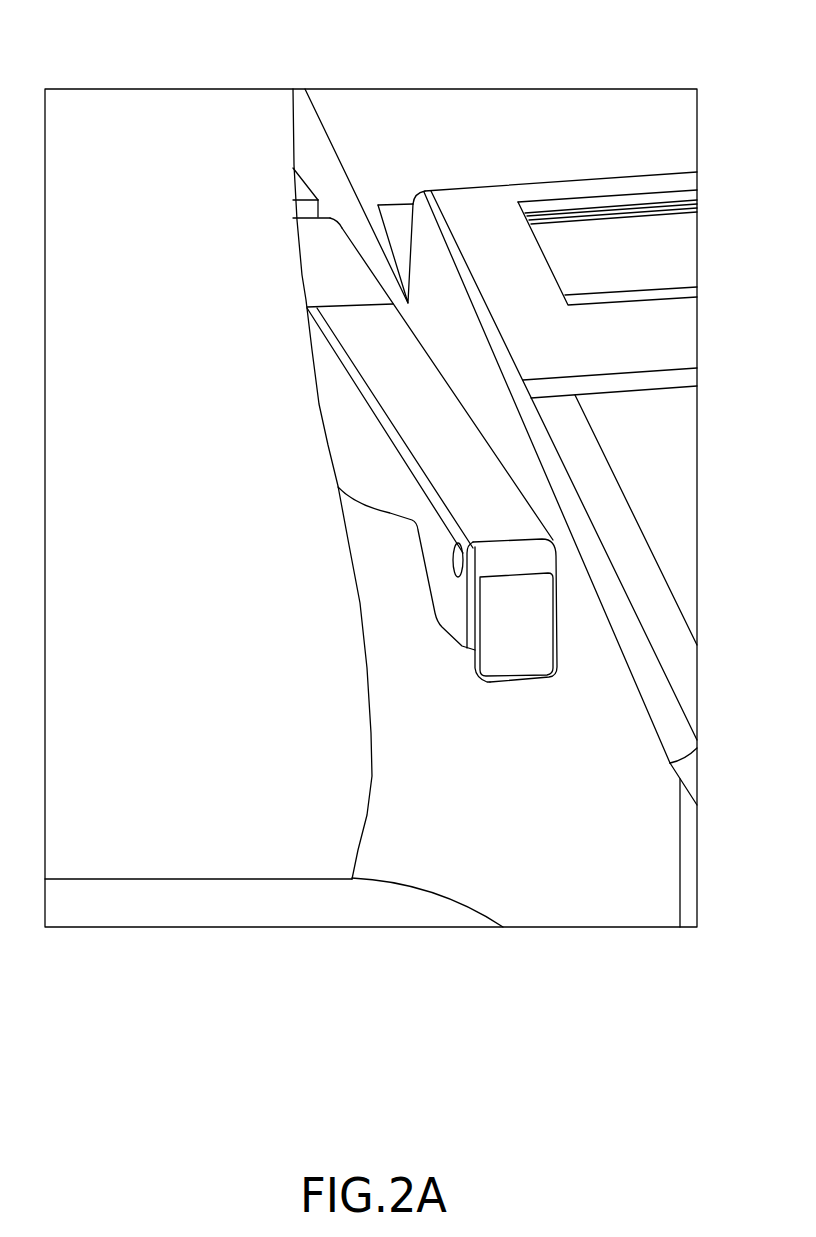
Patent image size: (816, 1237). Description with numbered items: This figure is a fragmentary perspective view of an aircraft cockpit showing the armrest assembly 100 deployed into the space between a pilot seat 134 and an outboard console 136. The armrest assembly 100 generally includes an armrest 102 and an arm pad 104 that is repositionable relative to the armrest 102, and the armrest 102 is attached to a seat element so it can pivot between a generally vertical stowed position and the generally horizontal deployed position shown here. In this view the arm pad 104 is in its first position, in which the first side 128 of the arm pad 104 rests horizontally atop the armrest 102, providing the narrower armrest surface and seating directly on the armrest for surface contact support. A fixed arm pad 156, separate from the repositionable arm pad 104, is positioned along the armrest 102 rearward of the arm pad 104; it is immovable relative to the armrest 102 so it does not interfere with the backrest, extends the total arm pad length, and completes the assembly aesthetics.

The armrest assembly 100 is at (478, 722).
The armrest 102 is at (415, 518).
The arm pad 104 is at (497, 512).
The first side 128 is at (427, 427).
The vehicle seat 134 is at (223, 100).
The console 136 is at (482, 195).
The fixed arm pad 156 is at (323, 237).